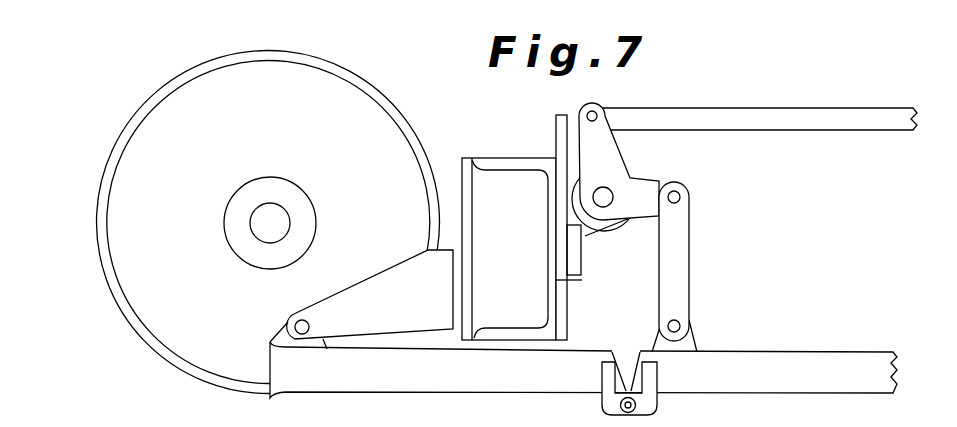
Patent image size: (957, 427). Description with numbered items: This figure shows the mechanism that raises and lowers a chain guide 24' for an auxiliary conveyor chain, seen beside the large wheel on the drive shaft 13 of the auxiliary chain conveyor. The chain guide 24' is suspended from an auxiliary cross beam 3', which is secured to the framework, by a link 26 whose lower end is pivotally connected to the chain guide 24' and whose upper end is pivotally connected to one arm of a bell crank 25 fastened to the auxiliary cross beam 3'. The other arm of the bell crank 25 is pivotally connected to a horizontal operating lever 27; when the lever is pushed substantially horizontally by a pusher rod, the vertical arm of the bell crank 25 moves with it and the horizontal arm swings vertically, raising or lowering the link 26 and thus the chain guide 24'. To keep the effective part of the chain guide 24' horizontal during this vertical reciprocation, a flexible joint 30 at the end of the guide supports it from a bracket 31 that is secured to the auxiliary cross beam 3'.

The drive shaft 13 is at (277, 220).
The bracket 31 is at (338, 312).
The auxiliary cross beam 3' is at (522, 221).
The bell crank 25 is at (603, 157).
The link 26 is at (677, 278).
The horizontal operating lever 27 is at (788, 108).
The flexible joint 30 is at (647, 408).
The chain guide 24' is at (583, 384).